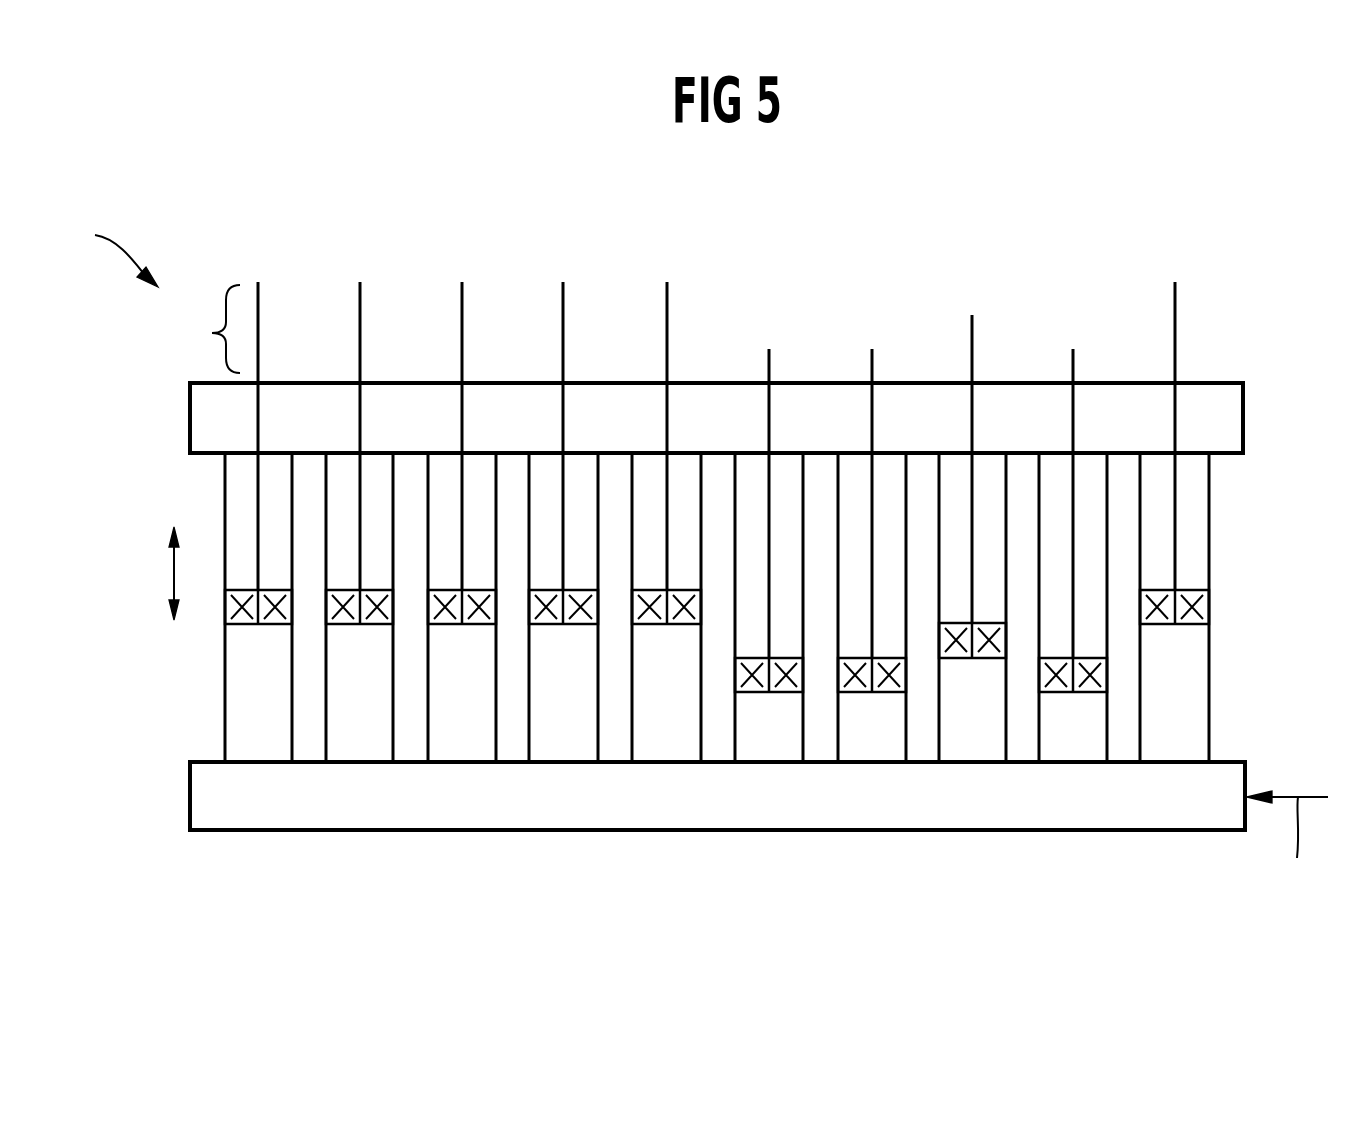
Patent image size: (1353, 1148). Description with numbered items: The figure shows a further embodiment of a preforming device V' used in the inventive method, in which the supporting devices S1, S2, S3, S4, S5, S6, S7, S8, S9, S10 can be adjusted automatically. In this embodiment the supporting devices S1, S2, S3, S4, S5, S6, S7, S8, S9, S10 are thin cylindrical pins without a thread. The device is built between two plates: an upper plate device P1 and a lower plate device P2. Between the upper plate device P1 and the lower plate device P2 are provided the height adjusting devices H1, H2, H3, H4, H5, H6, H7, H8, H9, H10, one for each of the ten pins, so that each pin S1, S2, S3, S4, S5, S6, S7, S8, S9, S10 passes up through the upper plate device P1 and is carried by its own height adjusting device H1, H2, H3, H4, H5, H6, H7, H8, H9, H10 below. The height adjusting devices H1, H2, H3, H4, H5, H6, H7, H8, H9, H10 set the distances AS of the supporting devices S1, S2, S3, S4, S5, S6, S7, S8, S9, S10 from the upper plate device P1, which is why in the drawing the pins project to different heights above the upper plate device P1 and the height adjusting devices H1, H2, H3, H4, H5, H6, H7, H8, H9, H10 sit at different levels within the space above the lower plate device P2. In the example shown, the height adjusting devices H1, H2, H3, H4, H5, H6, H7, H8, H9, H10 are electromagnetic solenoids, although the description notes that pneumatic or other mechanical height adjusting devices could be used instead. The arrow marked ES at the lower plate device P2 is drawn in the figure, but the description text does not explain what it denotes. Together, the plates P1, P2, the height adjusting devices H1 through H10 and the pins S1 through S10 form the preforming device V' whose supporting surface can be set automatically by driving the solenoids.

The upper plate device P1 is at (217, 418).
The lower plate device P2 is at (218, 793).
The height adjusting device H1 is at (239, 724).
The height adjusting device H2 is at (341, 724).
The height adjusting device H3 is at (443, 724).
The height adjusting device H4 is at (544, 724).
The height adjusting device H5 is at (648, 724).
The height adjusting device H6 is at (750, 744).
The height adjusting device H7 is at (853, 744).
The height adjusting device H8 is at (953, 721).
The height adjusting device H9 is at (1054, 744).
The height adjusting device H10 is at (1147, 724).
The supporting device S1 is at (258, 310).
The supporting device S2 is at (360, 310).
The supporting device S3 is at (462, 310).
The supporting device S4 is at (563, 310).
The supporting device S5 is at (667, 310).
The supporting device S6 is at (769, 367).
The supporting device S7 is at (872, 367).
The supporting device S8 is at (972, 342).
The supporting device S9 is at (1073, 367).
The supporting device S10 is at (1175, 310).
The distance AS is at (203, 329).
The preforming device V' is at (110, 252).
The input signal ES is at (1287, 848).